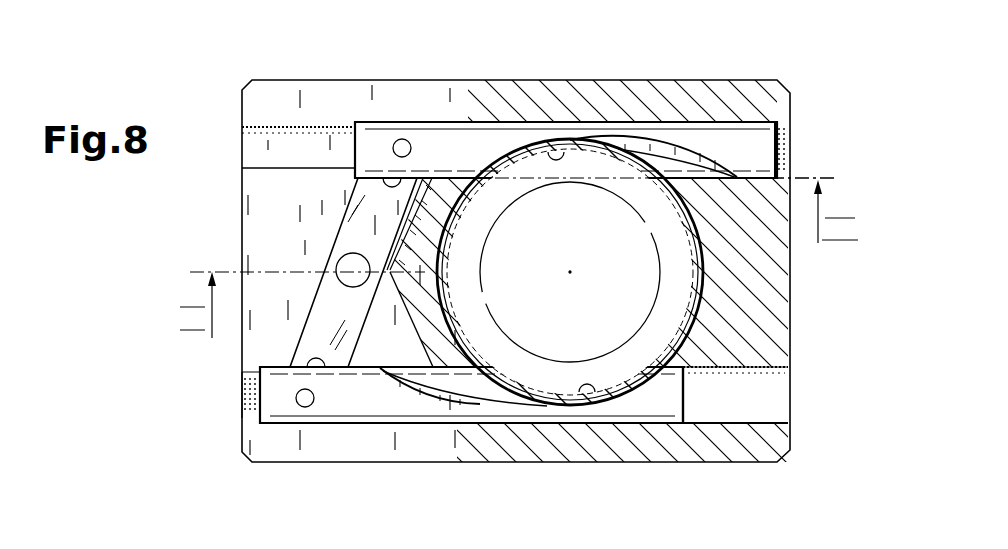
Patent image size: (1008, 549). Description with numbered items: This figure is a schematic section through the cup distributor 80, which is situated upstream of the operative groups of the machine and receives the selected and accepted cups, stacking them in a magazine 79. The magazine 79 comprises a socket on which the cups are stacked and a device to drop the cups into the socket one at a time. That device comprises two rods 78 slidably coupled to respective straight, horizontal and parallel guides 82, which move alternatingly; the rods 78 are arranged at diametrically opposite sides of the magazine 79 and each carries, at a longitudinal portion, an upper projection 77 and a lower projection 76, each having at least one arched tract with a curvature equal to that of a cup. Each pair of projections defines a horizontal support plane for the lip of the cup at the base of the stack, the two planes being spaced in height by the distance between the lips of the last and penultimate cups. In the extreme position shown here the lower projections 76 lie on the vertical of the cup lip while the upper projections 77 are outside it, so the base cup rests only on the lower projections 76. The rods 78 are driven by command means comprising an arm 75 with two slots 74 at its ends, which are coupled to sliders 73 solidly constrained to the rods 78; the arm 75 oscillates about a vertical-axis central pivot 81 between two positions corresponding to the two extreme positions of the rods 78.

The slider 73 is at (402, 139).
The slot 74 is at (412, 178).
The arm 75 is at (320, 330).
The lower projection 76 is at (568, 139).
The upper projection 77 is at (707, 155).
The rod 78 is at (775, 162).
The magazine 79 is at (645, 280).
The cup distributor 80 is at (222, 183).
The central pivot 81 is at (352, 256).
The guide 82 is at (255, 146).